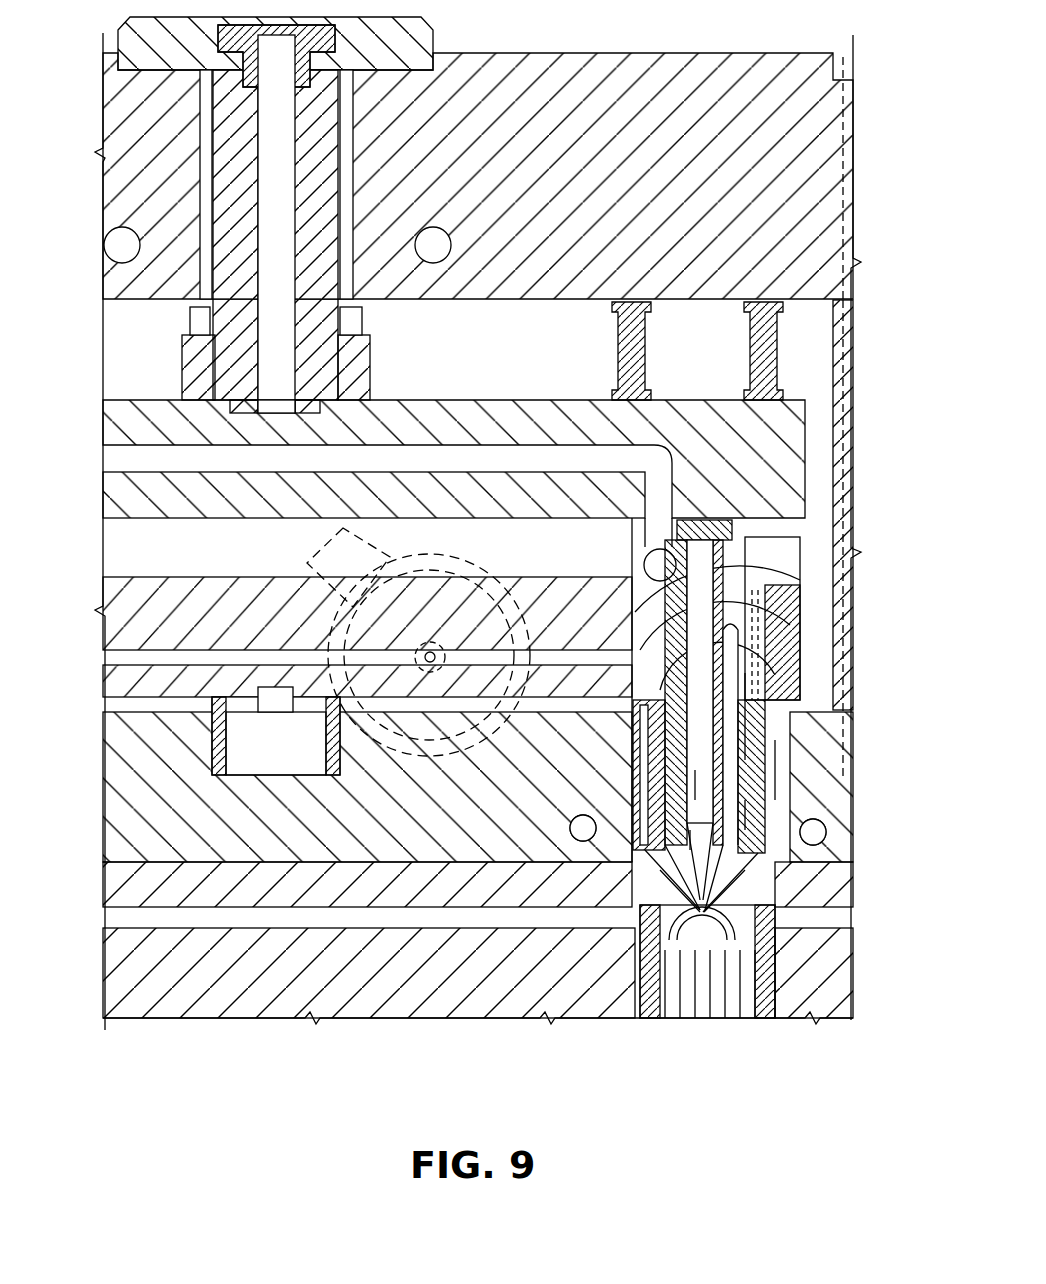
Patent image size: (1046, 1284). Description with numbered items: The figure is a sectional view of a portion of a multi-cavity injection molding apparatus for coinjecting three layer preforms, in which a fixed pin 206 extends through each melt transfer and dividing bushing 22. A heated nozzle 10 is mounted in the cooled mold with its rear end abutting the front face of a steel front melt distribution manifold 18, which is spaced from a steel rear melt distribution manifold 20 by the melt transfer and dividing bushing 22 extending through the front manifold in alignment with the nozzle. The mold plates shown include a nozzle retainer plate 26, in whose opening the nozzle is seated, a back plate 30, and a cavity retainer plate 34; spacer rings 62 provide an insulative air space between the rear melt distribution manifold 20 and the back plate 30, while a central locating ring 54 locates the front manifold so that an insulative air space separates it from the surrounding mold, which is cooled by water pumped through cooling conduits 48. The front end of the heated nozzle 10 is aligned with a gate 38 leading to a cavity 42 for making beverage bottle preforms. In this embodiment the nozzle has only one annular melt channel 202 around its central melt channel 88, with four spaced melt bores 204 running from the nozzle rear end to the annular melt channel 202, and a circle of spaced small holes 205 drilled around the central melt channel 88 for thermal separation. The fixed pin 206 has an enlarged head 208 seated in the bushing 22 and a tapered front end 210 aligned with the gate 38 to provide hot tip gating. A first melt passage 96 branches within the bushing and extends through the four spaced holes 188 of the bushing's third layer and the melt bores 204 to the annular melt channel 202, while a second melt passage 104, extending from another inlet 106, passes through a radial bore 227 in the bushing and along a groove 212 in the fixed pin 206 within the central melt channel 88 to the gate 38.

The heated nozzle 10 is at (800, 730).
The front melt distribution manifold 18 is at (150, 622).
The rear melt distribution manifold 20 is at (128, 492).
The melt transfer and dividing bushing 22 is at (755, 537).
The nozzle retainer plate 26 is at (130, 792).
The back plate 30 is at (637, 65).
The cavity retainer plate 34 is at (130, 965).
The gate 38 is at (722, 1012).
The cavity 42 is at (655, 1012).
The cooling conduit 48 is at (433, 246).
The central locating ring 54 is at (213, 757).
The spacer ring 62 is at (763, 353).
The central melt channel 88 is at (690, 836).
The first melt passage 96 is at (655, 463).
The second melt passage 104 is at (735, 640).
The inlet 106 is at (430, 662).
The spaced holes 188 is at (740, 650).
The annular melt channel 202 is at (745, 806).
The melt bores 204 is at (710, 700).
The spaced small holes 205 is at (745, 673).
The fixed pin 206 is at (790, 760).
The enlarged head 208 is at (695, 525).
The tapered front end 210 is at (745, 886).
The groove 212 is at (715, 786).
The radial bore 227 is at (700, 578).